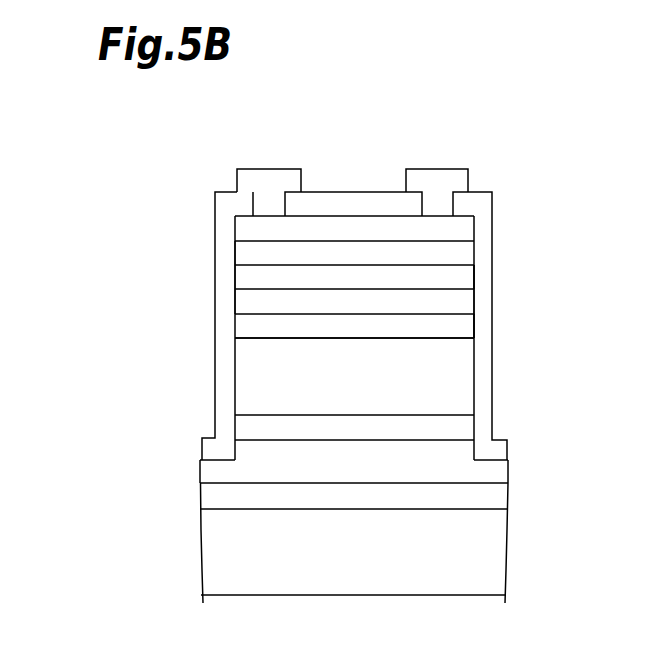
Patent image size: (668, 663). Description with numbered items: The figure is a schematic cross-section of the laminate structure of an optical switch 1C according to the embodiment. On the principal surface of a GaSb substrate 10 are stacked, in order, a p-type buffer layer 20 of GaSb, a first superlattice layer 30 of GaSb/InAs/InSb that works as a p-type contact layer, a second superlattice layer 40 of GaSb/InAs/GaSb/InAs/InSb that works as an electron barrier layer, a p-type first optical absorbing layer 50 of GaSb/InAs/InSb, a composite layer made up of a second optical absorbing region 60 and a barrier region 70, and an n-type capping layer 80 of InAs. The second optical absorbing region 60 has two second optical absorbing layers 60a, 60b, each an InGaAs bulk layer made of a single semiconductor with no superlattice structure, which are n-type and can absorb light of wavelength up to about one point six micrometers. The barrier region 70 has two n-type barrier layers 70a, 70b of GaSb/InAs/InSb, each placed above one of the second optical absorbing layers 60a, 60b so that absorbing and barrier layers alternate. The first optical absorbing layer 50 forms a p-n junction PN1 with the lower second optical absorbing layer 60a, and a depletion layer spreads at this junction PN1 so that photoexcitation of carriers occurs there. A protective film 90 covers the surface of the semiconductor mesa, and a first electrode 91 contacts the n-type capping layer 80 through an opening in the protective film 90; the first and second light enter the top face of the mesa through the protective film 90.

The light receiving element 1C is at (382, 158).
The substrate 10 is at (486, 553).
The p-type buffer layer 20 is at (490, 497).
The first superlattice layer 30 is at (490, 473).
The second superlattice layer 40 is at (465, 423).
The first optical absorbing layer 50 is at (465, 392).
The second optical absorbing region 60 is at (586, 267).
The second optical absorbing layer 60a is at (465, 327).
The second optical absorbing layer 60b is at (465, 277).
The barrier region 70 is at (147, 242).
The barrier layer 70a is at (245, 304).
The barrier layer 70b is at (243, 255).
The n-type capping layer 80 is at (465, 229).
The protective film 90 is at (225, 192).
The first electrode 91 is at (261, 177).
The p-n junction PN1 is at (277, 340).